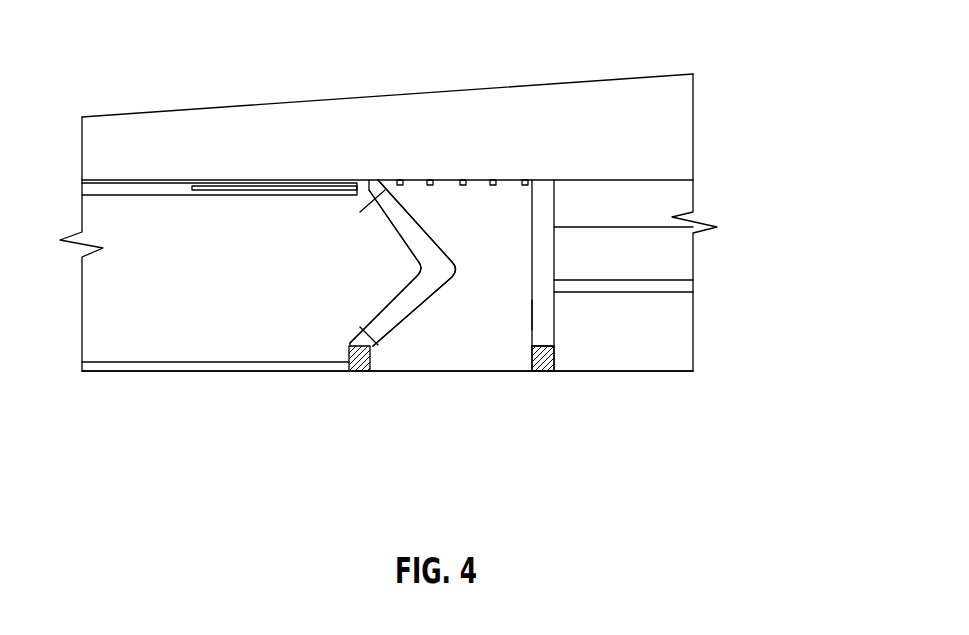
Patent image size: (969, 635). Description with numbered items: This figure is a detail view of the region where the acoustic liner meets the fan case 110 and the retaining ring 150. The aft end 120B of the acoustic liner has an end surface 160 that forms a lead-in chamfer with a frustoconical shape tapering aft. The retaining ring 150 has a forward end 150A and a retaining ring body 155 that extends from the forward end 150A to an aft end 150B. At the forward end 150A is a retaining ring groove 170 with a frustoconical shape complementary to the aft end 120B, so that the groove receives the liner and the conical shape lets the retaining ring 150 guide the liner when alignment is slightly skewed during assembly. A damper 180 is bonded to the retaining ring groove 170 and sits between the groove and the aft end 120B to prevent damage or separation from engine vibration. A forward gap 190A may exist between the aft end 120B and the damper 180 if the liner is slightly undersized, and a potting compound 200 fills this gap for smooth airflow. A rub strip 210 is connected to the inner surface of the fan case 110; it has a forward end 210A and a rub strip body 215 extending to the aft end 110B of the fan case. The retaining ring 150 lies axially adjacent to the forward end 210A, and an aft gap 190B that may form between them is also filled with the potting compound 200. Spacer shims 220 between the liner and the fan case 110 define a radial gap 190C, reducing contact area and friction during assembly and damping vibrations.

The fan case 110 is at (110, 115).
The aft end of the fan case 110B is at (732, 111).
The radial gap 190C is at (132, 187).
The spacer shims 220 is at (249, 176).
The end surface 160 is at (378, 217).
The retaining ring groove 170 is at (439, 248).
The damper 180 is at (413, 297).
The retaining ring 150 is at (473, 198).
The forward end of the retaining ring 150A is at (398, 372).
The aft end of the retaining ring 150B is at (526, 376).
The potting compound 200 is at (348, 357).
The forward gap 190A is at (346, 382).
The aft gap 190B is at (547, 332).
The aft end of the acoustic liner 120B is at (302, 372).
The rub strip 210 is at (697, 252).
The forward end of the rub strip 210A is at (565, 304).
The rub strip body 215 is at (660, 349).
The retaining ring body 155 is at (520, 316).